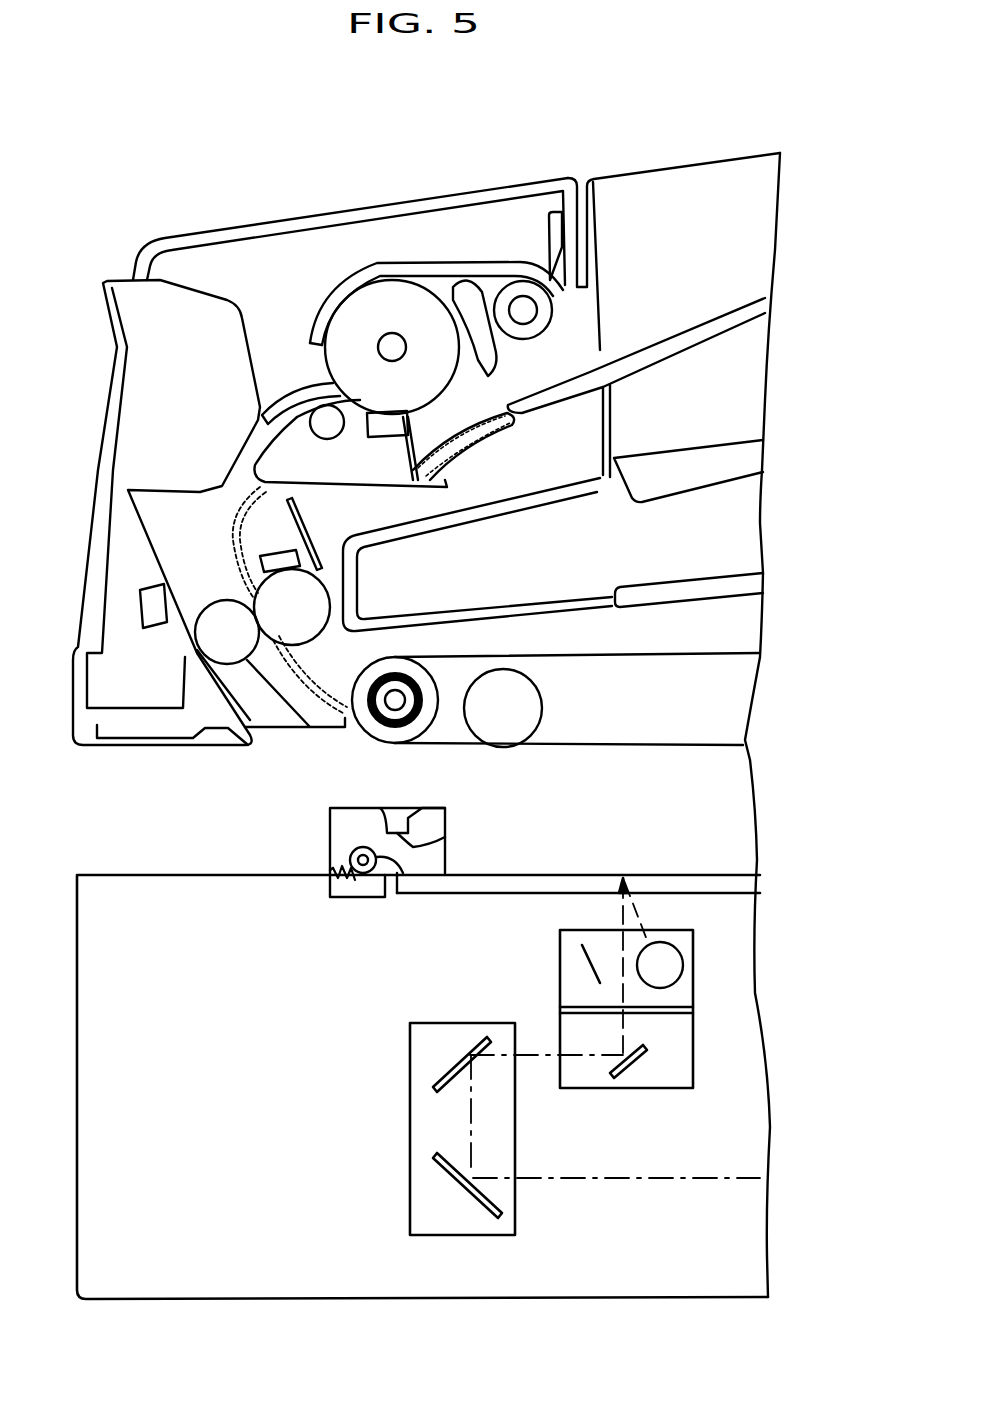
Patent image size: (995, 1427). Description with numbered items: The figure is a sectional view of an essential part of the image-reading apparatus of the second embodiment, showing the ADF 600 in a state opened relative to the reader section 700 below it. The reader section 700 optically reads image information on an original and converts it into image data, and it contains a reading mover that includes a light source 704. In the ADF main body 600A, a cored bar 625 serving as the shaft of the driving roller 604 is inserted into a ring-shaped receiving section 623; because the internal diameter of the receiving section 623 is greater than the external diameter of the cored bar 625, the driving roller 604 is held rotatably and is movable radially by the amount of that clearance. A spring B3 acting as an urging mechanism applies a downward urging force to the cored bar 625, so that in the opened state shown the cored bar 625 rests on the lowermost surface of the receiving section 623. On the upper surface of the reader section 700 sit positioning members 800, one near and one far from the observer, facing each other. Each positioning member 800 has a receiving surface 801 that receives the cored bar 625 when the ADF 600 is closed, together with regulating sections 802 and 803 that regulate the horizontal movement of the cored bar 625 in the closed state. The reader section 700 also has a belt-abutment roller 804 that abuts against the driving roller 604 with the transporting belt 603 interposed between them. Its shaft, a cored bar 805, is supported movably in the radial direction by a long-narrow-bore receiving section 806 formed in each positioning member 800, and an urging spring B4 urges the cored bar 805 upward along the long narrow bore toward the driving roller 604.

The ADF main body 600A is at (295, 217).
The ADF 600 is at (584, 164).
The transporting belt 603 is at (608, 748).
The driving roller 604 is at (570, 656).
The receiving section 623 is at (360, 688).
The cored bar 625 is at (420, 680).
The spring B3 is at (400, 657).
The reader section 700 is at (77, 1032).
The light source 704 is at (685, 965).
The positioning member 800 is at (330, 830).
The receiving surface 801 is at (445, 840).
The regulating section 802 is at (445, 817).
The regulating section 803 is at (392, 832).
The belt-abutment roller 804 is at (403, 873).
The cored bar 805 is at (365, 853).
The long-narrow-bore receiving section 806 is at (347, 857).
The urging spring B4 is at (328, 883).